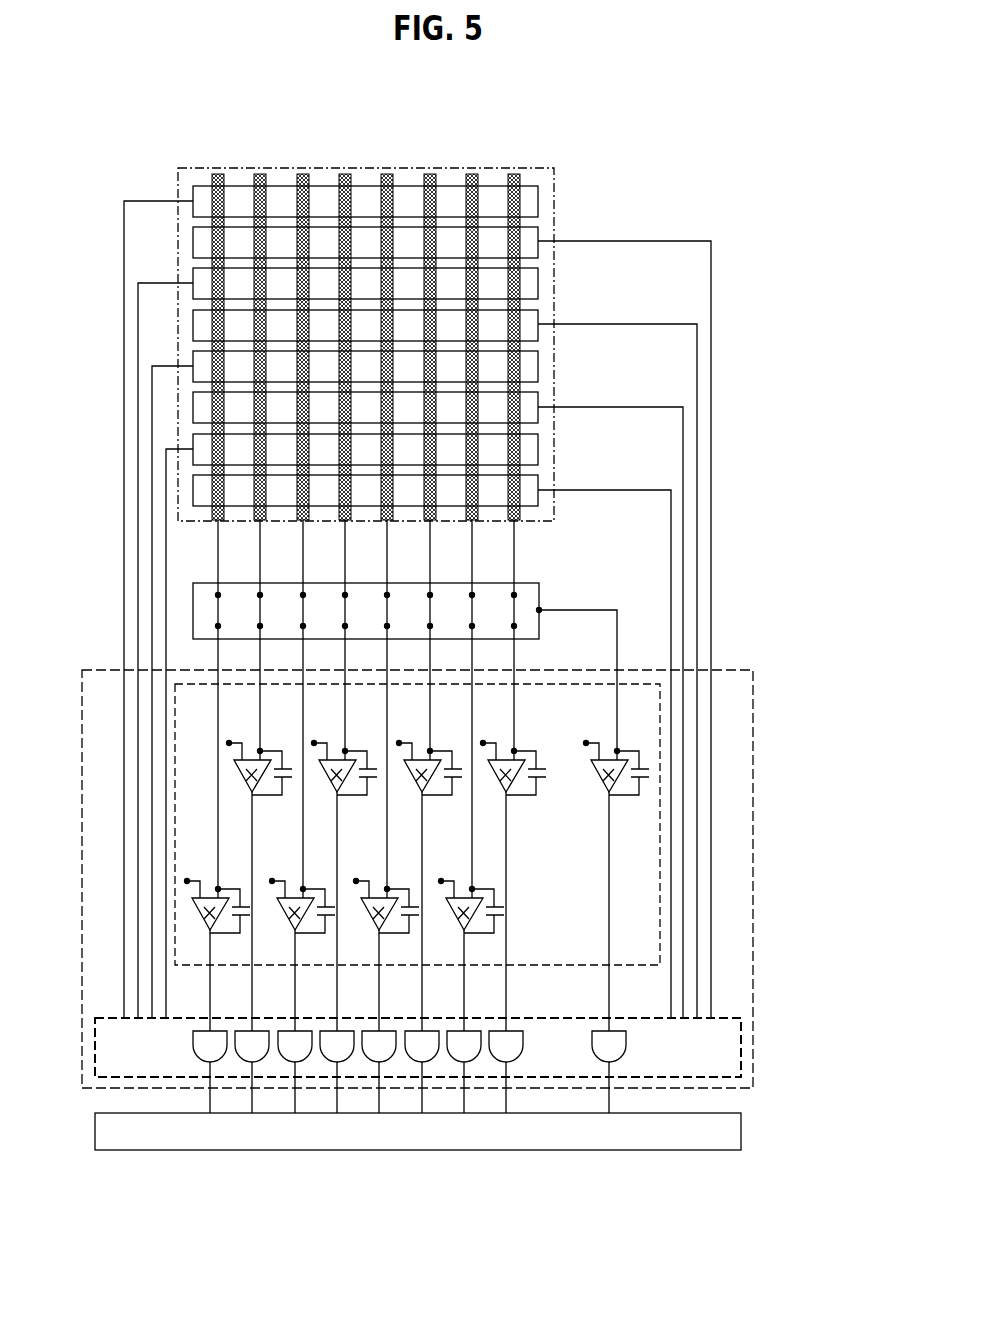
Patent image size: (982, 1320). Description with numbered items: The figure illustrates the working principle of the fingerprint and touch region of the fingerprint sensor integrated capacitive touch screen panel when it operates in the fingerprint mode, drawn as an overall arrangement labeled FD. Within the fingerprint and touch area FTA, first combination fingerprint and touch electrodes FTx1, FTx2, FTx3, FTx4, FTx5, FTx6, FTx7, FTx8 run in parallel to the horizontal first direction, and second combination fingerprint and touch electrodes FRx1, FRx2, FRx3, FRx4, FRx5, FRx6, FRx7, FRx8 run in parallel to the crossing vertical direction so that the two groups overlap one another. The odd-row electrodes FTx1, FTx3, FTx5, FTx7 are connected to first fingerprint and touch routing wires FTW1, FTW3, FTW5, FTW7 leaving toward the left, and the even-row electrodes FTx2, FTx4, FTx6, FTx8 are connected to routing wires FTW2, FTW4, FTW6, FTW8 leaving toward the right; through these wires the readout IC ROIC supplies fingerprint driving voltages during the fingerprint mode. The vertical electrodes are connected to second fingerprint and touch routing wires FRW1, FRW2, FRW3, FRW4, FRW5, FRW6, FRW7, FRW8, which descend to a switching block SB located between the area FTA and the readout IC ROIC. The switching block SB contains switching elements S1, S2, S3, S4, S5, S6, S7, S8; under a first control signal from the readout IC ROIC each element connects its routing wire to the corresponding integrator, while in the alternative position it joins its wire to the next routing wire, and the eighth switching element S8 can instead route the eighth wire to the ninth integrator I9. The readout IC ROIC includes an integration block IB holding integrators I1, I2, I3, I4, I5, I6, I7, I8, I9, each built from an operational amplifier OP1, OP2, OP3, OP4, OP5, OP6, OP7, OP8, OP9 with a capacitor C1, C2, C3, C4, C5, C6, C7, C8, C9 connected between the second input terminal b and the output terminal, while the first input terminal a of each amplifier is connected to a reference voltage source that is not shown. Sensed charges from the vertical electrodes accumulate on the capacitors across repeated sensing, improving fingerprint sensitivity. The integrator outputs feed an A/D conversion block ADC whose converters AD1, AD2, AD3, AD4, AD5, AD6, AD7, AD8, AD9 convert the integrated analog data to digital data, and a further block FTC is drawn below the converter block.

The fingerprint detector FD is at (151, 119).
The fingerprint and touch area FTA is at (178, 172).
The second combination fingerprint and touch electrode FRx1 is at (218, 174).
The second combination fingerprint and touch electrode FRx2 is at (260, 174).
The second combination fingerprint and touch electrode FRx3 is at (303, 174).
The second combination fingerprint and touch electrode FRx4 is at (345, 174).
The second combination fingerprint and touch electrode FRx5 is at (387, 174).
The second combination fingerprint and touch electrode FRx6 is at (430, 174).
The second combination fingerprint and touch electrode FRx7 is at (472, 174).
The second combination fingerprint and touch electrode FRx8 is at (514, 174).
The first combination fingerprint and touch electrode FTx1 is at (538, 198).
The first combination fingerprint and touch electrode FTx2 is at (538, 232).
The first combination fingerprint and touch electrode FTx3 is at (538, 282).
The first combination fingerprint and touch electrode FTx4 is at (538, 313).
The first combination fingerprint and touch electrode FTx5 is at (538, 365).
The first combination fingerprint and touch electrode FTx6 is at (538, 397).
The first combination fingerprint and touch electrode FTx7 is at (538, 448).
The first combination fingerprint and touch electrode FTx8 is at (538, 478).
The first fingerprint and touch routing wire FTW1 is at (124, 571).
The first fingerprint and touch routing wire FTW2 is at (711, 573).
The first fingerprint and touch routing wire FTW3 is at (138, 597).
The first fingerprint and touch routing wire FTW4 is at (697, 597).
The first fingerprint and touch routing wire FTW5 is at (152, 624).
The first fingerprint and touch routing wire FTW6 is at (683, 625).
The first fingerprint and touch routing wire FTW7 is at (166, 648).
The first fingerprint and touch routing wire FTW8 is at (671, 650).
The second fingerprint and touch routing wire FRW1 is at (198, 709).
The second fingerprint and touch routing wire FRW2 is at (241, 640).
The second fingerprint and touch routing wire FRW3 is at (283, 709).
The second fingerprint and touch routing wire FRW4 is at (325, 640).
The second fingerprint and touch routing wire FRW5 is at (367, 709).
The second fingerprint and touch routing wire FRW6 is at (410, 640).
The second fingerprint and touch routing wire FRW7 is at (452, 709).
The second fingerprint and touch routing wire FRW8 is at (494, 640).
The switching block SB is at (540, 590).
The first switching element S1 is at (205, 611).
The second switching element S2 is at (244, 611).
The third switching element S3 is at (286, 611).
The fourth switching element S4 is at (328, 611).
The fifth switching element S5 is at (370, 611).
The sixth switching element S6 is at (413, 611).
The seventh switching element S7 is at (455, 611).
The eighth switching element S8 is at (497, 611).
The readout IC ROIC is at (753, 935).
The integration block IB is at (660, 878).
The first integrator I1 is at (213, 972).
The second integrator I2 is at (255, 903).
The third integrator I3 is at (298, 972).
The fourth integrator I4 is at (340, 903).
The fifth integrator I5 is at (382, 972).
The sixth integrator I6 is at (425, 903).
The seventh integrator I7 is at (467, 972).
The eighth integrator I8 is at (509, 903).
The ninth integrator I9 is at (612, 903).
The first operational amplifier OP1 is at (207, 915).
The second operational amplifier OP2 is at (249, 777).
The third operational amplifier OP3 is at (292, 915).
The fourth operational amplifier OP4 is at (334, 777).
The fifth operational amplifier OP5 is at (376, 915).
The sixth operational amplifier OP6 is at (419, 777).
The seventh operational amplifier OP7 is at (461, 915).
The eighth operational amplifier OP8 is at (503, 777).
The ninth operational amplifier OP9 is at (606, 777).
The capacitor C1 is at (230, 922).
The capacitor C2 is at (272, 784).
The capacitor C3 is at (315, 922).
The capacitor C4 is at (357, 784).
The capacitor C5 is at (399, 922).
The capacitor C6 is at (442, 784).
The capacitor C7 is at (484, 922).
The capacitor C8 is at (526, 784).
The capacitor C9 is at (629, 784).
The first input terminal a is at (193, 871).
The second input terminal b is at (226, 880).
The A/D conversion block ADC is at (741, 1045).
The second A/D converter AD1 is at (205, 1031).
The second A/D converter AD2 is at (247, 1031).
The second A/D converter AD3 is at (290, 1031).
The second A/D converter AD4 is at (332, 1031).
The second A/D converter AD5 is at (374, 1031).
The second A/D converter AD6 is at (417, 1031).
The second A/D converter AD7 is at (459, 1031).
The second A/D converter AD8 is at (501, 1031).
The A/D converter AD9 is at (603, 1031).
The fingerprint timing controller FTC is at (741, 1130).